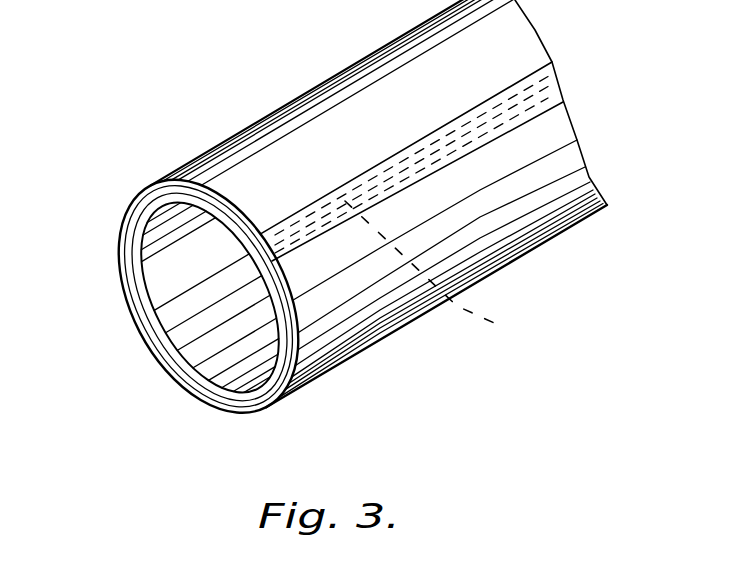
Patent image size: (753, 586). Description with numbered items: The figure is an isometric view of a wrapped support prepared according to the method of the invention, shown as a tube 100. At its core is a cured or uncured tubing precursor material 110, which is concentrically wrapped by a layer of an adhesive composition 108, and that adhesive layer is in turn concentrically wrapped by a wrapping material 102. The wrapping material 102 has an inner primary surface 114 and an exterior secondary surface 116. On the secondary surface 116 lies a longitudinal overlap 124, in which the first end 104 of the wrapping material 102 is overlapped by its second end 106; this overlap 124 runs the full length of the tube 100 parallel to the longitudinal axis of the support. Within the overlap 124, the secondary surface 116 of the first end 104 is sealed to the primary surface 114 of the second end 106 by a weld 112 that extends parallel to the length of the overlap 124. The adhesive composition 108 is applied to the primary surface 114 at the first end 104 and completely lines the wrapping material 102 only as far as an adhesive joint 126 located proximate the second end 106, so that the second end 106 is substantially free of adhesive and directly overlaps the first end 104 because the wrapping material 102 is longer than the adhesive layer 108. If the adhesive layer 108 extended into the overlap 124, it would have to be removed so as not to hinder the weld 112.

The tube 100 is at (284, 76).
The wrapping material 102 is at (261, 412).
The first end 104 is at (275, 258).
The second end 106 is at (287, 213).
The adhesive composition 108 is at (207, 392).
The tubing precursor material 110 is at (183, 355).
The weld 112 is at (442, 270).
The primary surface 114 is at (228, 410).
The secondary surface 116 is at (527, 218).
The longitudinal overlap 124 is at (563, 57).
The adhesive joint 126 is at (268, 258).